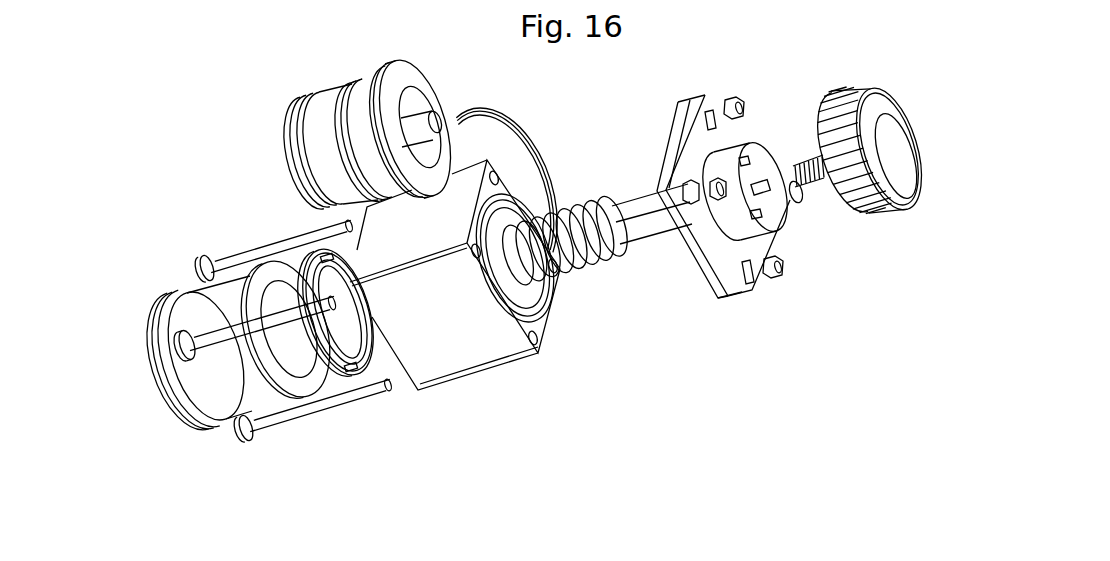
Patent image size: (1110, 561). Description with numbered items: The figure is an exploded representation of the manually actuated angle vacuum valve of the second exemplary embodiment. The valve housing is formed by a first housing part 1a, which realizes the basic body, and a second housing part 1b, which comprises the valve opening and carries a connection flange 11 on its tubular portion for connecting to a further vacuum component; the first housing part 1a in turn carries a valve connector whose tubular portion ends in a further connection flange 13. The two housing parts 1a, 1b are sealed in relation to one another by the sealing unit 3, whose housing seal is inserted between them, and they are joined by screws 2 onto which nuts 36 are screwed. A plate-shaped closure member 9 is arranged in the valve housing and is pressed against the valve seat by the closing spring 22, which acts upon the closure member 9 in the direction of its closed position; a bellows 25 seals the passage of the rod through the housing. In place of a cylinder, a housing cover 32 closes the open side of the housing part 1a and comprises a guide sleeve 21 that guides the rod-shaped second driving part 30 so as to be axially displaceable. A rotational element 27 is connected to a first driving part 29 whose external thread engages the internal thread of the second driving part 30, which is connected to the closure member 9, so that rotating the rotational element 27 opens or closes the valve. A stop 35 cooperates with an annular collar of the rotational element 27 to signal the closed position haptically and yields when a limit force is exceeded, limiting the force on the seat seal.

The first housing part 1a is at (449, 352).
The second housing part 1b is at (224, 382).
The screws 2 is at (236, 262).
The sealing unit 3 is at (350, 383).
The closure member 9 is at (298, 168).
The connection flange 11 is at (195, 413).
The connection flange 13 is at (516, 128).
The guide sleeve 21 is at (643, 243).
The closing spring 22 is at (578, 210).
The bellows 25 is at (316, 125).
The rotational element 27 is at (852, 88).
The first driving part 29 is at (800, 172).
The second driving part 30 is at (411, 125).
The housing cover 32 is at (722, 286).
The stop 35 is at (742, 163).
The nuts 36 is at (733, 98).